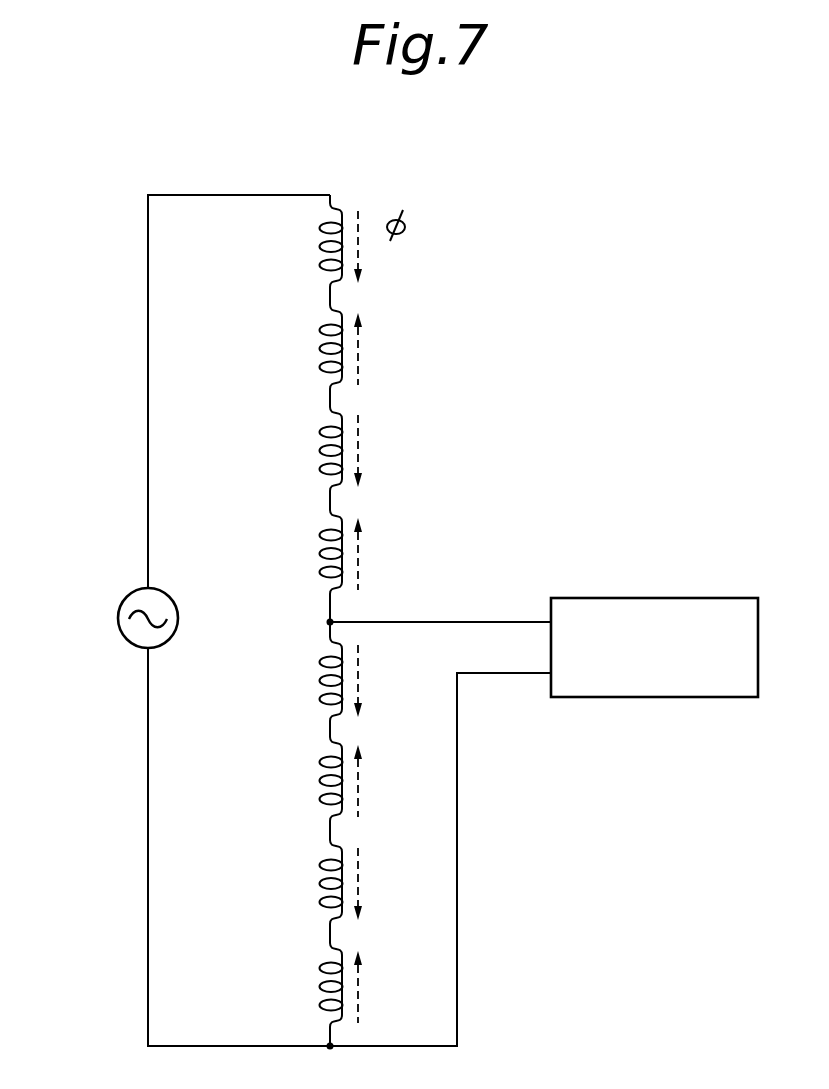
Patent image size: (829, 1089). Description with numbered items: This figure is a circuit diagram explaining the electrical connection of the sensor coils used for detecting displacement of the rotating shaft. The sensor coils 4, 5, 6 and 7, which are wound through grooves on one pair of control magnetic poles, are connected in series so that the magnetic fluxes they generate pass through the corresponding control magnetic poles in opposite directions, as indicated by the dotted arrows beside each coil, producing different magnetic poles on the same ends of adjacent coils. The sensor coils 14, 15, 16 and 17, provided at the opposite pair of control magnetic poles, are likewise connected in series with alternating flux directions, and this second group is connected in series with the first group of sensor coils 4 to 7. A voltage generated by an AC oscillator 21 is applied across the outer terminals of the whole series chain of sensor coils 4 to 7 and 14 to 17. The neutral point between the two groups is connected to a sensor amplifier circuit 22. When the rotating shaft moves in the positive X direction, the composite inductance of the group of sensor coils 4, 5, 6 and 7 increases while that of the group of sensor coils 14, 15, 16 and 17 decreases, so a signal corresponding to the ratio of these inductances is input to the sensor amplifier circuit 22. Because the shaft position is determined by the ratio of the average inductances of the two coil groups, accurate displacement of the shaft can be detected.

The sensor coil 4 is at (318, 249).
The sensor coil 5 is at (318, 348).
The sensor coil 6 is at (318, 451).
The sensor coil 7 is at (318, 553).
The sensor coil 14 is at (318, 680).
The sensor coil 15 is at (318, 780).
The sensor coil 16 is at (318, 884).
The sensor coil 17 is at (318, 986).
The AC oscillator 21 is at (127, 598).
The sensor amplifier circuit 22 is at (633, 660).